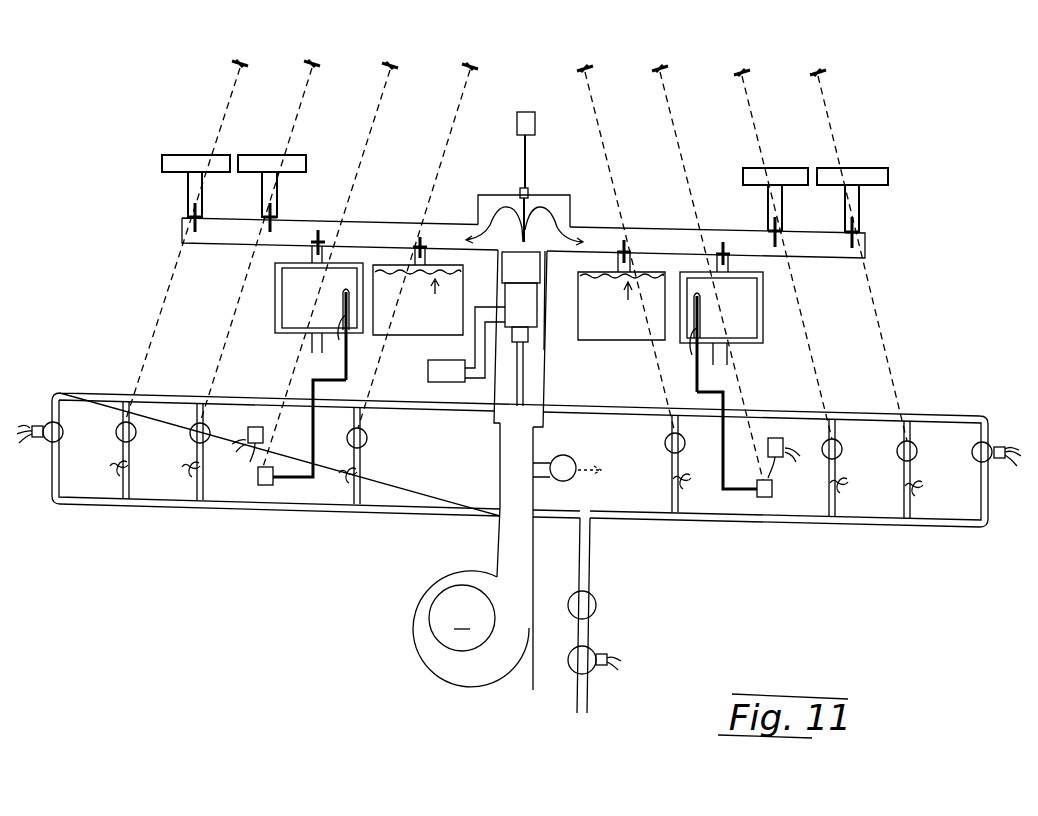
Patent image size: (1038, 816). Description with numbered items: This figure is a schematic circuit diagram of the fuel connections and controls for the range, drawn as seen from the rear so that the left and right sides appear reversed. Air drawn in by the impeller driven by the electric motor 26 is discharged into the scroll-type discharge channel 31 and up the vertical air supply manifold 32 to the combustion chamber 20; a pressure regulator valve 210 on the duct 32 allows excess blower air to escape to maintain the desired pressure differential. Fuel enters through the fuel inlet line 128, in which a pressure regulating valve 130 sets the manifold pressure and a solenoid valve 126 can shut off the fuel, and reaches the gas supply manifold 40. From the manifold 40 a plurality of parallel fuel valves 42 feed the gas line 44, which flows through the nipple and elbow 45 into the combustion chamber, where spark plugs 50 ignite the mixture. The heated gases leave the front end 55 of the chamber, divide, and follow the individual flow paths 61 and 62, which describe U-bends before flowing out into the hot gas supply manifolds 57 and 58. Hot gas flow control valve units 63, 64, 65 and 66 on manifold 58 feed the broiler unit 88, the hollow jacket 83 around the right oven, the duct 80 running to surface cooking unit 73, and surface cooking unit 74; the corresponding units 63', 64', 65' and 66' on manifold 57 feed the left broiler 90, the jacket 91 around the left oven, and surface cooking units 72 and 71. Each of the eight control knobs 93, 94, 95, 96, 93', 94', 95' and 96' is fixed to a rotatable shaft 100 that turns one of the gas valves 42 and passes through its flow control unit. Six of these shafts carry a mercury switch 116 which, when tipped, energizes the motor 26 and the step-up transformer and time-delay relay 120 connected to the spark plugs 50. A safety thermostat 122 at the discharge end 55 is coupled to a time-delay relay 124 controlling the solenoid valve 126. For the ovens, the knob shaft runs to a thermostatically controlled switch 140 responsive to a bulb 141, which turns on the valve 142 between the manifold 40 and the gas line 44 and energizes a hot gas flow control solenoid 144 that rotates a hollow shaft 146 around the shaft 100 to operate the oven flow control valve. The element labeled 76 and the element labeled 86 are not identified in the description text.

The combustion chamber 20 is at (553, 336).
The electric motor 26 is at (430, 617).
The scroll-type discharge channel 31 is at (470, 687).
The air supply manifold 32 is at (504, 526).
The gas supply manifold 40 is at (325, 506).
The fuel valves 42 is at (136, 429).
The gas line 44 is at (447, 410).
The nipple and elbow 45 is at (524, 384).
The spark plugs 50 is at (510, 312).
The front end of combustion chamber 55 is at (549, 252).
The hot gas supply manifold 57 is at (820, 259).
The hot gas supply manifold 58 is at (224, 246).
The flow path 61 is at (566, 226).
The flow path 62 is at (501, 200).
The hot gas flow control valve unit 63 is at (437, 230).
The hot gas flow control valve unit 63' is at (639, 229).
The hot gas flow control valve unit 64 is at (348, 229).
The hot gas flow control valve unit 64' is at (737, 231).
The hot gas flow control valve unit 65 is at (291, 212).
The hot gas flow control valve unit 65' is at (799, 218).
The hot gas flow control valve unit 66 is at (159, 215).
The hot gas flow control valve unit 66' is at (883, 219).
The surface cooking unit 71 is at (869, 163).
The surface cooking unit 72 is at (784, 163).
The surface cooking unit 73 is at (312, 146).
The surface cooking unit 74 is at (185, 143).
The header stem 76 is at (188, 185).
The duct 80 is at (278, 186).
The hollow jacket 83 is at (270, 311).
The tank 86 is at (432, 256).
The broiler unit 88 is at (418, 292).
The left broiler 90 is at (621, 306).
The jacket 91 is at (763, 316).
The control knob 93 is at (465, 35).
The control knob 93' is at (600, 36).
The oven control knob 94 is at (380, 35).
The oven control knob 94' is at (671, 36).
The control knob 95 is at (312, 34).
The control knob 95' is at (748, 38).
The control knob 96 is at (248, 34).
The control knob 96' is at (827, 38).
The rotatable shaft 100 is at (295, 124).
The mercury switch 116 is at (116, 464).
The step-up transformer and time-delay relay 120 is at (428, 375).
The safety thermostat 122 is at (529, 195).
The time-delay relay 124 is at (534, 120).
The solenoid valve 126 is at (596, 652).
The fuel inlet line 128 is at (586, 697).
The pressure regulating valve 130 is at (597, 604).
The thermostatically controlled switch 140 is at (263, 487).
The bulb 141 is at (349, 330).
The valve 142 is at (49, 442).
The hot gas flow control solenoid 144 is at (250, 446).
The hollow shaft 146 is at (280, 370).
The pressure regulator valve 210 is at (572, 460).